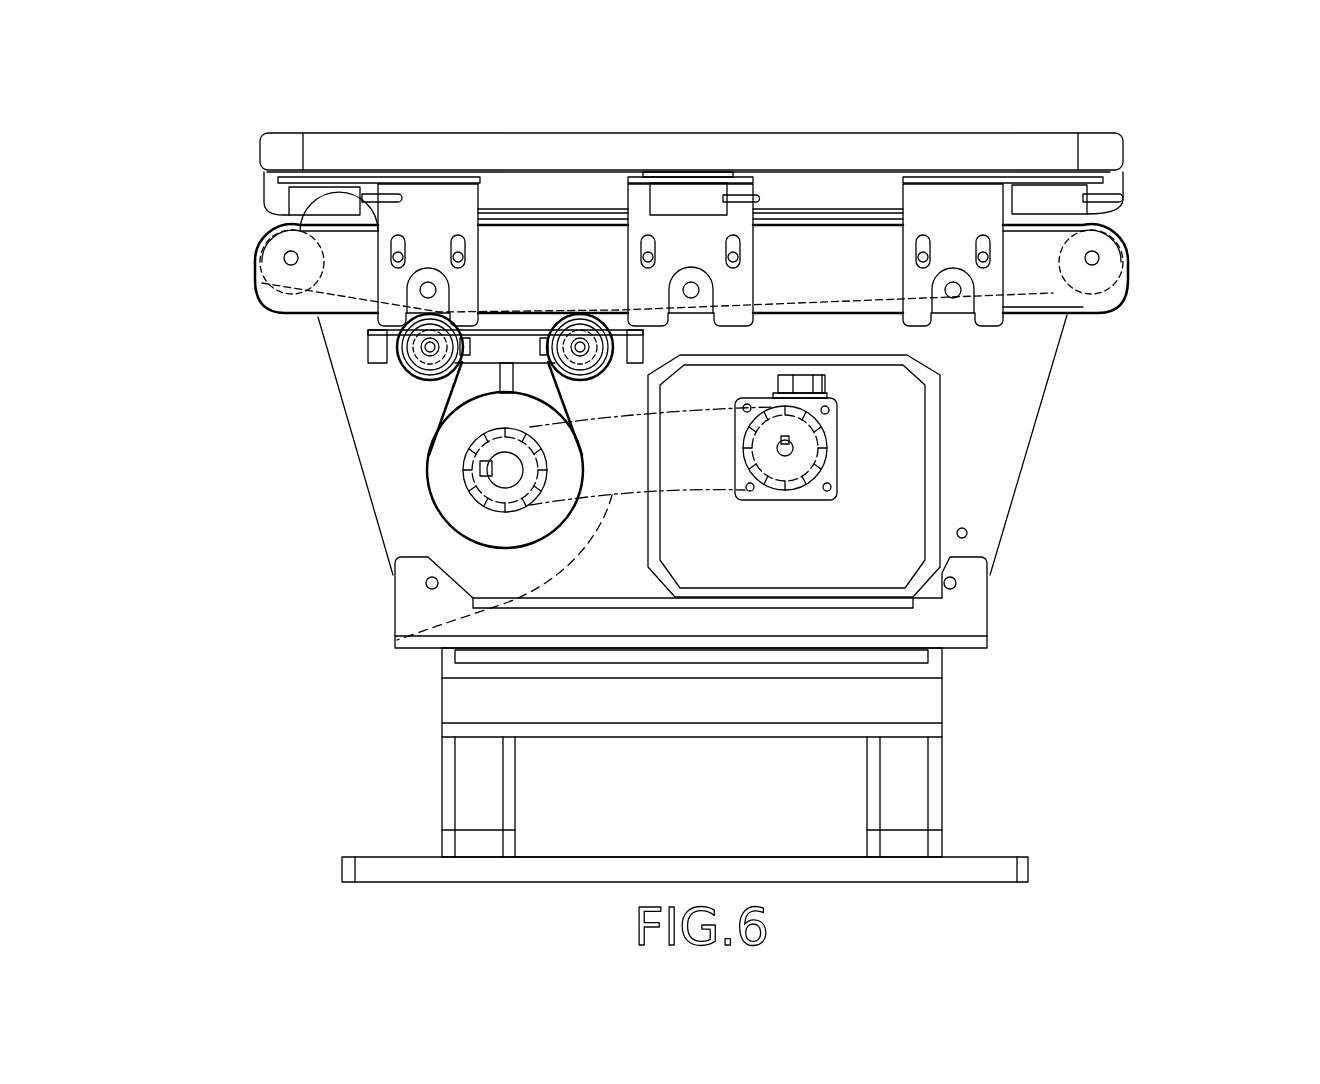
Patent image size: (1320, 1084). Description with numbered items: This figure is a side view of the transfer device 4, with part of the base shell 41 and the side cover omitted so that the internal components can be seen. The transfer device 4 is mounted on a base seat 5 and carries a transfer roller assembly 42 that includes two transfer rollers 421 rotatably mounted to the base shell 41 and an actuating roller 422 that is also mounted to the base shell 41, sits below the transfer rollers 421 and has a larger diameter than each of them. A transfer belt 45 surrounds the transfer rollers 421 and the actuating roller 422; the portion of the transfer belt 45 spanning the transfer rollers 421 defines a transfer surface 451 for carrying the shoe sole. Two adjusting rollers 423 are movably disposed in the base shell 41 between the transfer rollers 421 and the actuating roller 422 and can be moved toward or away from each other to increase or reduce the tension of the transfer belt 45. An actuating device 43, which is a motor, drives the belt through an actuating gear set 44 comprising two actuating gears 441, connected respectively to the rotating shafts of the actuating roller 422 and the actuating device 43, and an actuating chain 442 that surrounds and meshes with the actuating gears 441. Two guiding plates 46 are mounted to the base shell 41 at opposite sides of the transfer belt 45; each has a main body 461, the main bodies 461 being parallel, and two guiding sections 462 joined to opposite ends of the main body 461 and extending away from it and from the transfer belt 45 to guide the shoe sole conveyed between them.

The transfer device 4 is at (765, 475).
The base shell 41 is at (1038, 435).
The transfer roller assembly 42 is at (385, 455).
The actuating roller 422 is at (440, 473).
The adjusting rollers 423 is at (408, 369).
The actuating device 43 is at (830, 475).
The actuating gear set 44 is at (374, 502).
The actuating gears 441 is at (470, 500).
The actuating chain 442 is at (393, 623).
The transfer belt 45 is at (691, 193).
The transfer surface 451 is at (657, 297).
The guiding plates 46 is at (693, 136).
The main body 461 is at (690, 198).
The guiding sections 462 is at (277, 153).
The transfer rollers 421 is at (273, 257).
The base seat 5 is at (943, 793).